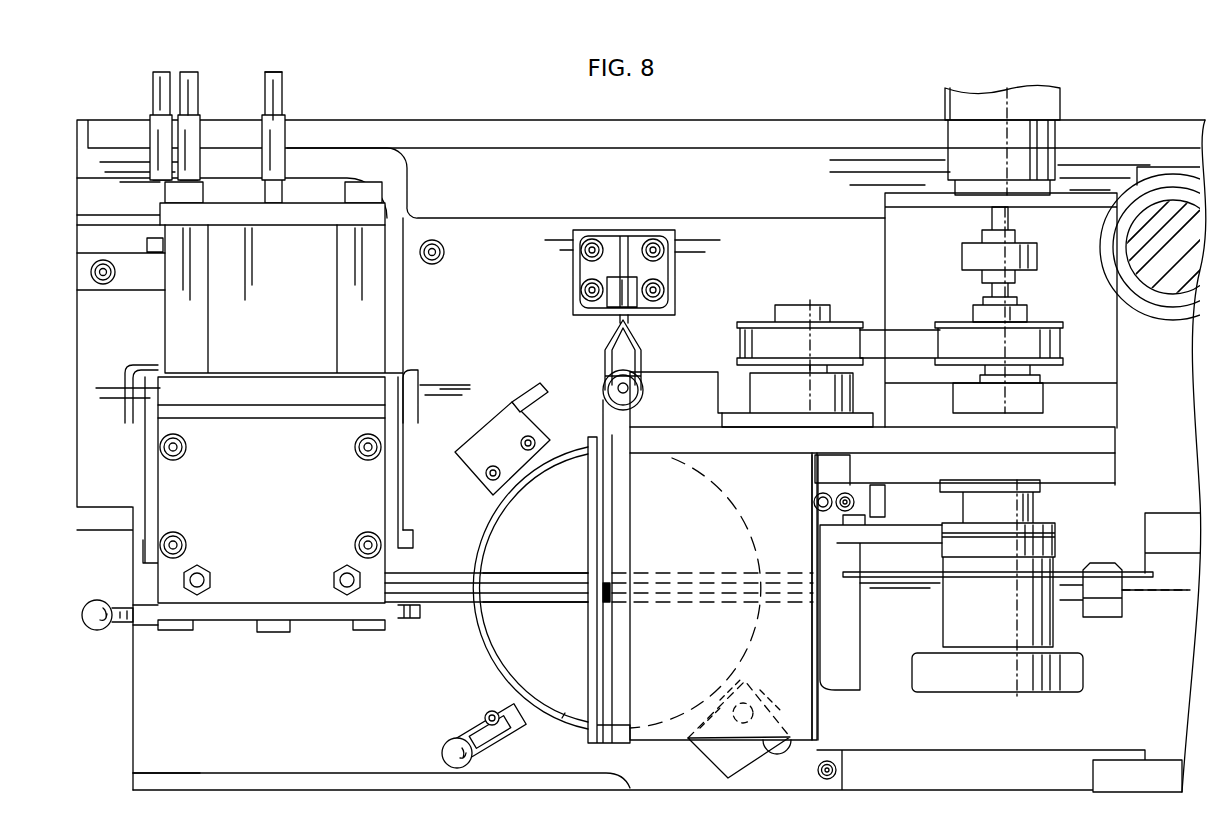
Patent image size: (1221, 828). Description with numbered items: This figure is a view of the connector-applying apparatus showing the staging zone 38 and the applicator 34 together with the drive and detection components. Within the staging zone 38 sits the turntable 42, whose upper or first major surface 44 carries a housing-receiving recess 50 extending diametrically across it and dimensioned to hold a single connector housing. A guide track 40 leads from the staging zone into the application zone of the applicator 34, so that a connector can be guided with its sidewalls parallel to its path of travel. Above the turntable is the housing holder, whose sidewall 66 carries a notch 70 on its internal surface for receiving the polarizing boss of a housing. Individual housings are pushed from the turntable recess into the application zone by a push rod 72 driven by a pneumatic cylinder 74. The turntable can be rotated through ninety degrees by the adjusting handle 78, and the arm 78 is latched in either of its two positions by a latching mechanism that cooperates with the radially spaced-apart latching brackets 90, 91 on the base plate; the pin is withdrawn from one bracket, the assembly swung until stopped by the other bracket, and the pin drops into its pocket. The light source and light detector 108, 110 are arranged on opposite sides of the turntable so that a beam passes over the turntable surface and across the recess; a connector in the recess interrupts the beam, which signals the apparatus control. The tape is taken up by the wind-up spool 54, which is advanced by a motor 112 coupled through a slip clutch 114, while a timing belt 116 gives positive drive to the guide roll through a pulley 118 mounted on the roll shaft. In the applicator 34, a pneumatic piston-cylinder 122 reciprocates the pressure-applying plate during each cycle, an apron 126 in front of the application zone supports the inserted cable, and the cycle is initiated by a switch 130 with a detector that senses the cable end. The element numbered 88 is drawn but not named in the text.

The applicator 34 is at (363, 521).
The staging zone 38 is at (582, 441).
The guide track 40 is at (463, 583).
The turntable 42 is at (565, 713).
The first major surface 44 is at (573, 522).
The housing-receiving recess 50 is at (537, 603).
The wind-up spool 54 is at (1070, 675).
The sidewall 66 is at (588, 620).
The notch 70 is at (610, 583).
The push rod 72 is at (902, 590).
The pneumatic cylinder 74 is at (1093, 617).
The adjusting handle 78 is at (450, 742).
The arm assembly 88 is at (447, 726).
The latching bracket 90 is at (490, 710).
The latching bracket 91 is at (787, 742).
The light source 108 is at (511, 408).
The light detector 110 is at (713, 752).
The motor 112 is at (1040, 138).
The slip clutch 114 is at (975, 257).
The timing belt 116 is at (910, 338).
The pulley 118 is at (795, 338).
The pneumatic piston-cylinder 122 is at (323, 310).
The apron 126 is at (215, 722).
The switch 130 is at (283, 122).